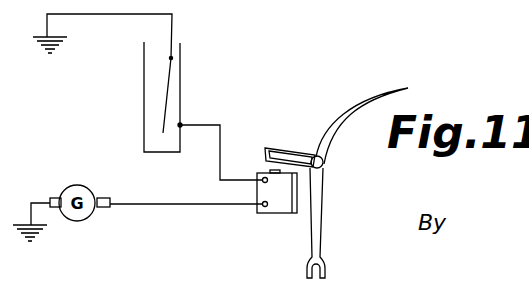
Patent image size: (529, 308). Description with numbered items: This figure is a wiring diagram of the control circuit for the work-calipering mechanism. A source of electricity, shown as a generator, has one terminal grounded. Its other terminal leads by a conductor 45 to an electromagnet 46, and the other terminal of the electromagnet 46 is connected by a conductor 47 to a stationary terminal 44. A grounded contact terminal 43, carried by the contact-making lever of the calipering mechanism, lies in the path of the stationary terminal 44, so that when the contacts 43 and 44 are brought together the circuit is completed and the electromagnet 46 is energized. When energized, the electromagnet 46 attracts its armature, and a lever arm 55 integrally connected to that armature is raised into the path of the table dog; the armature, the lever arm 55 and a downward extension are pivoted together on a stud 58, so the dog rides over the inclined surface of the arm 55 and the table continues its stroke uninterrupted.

The grounded contact terminal 43 is at (165, 123).
The stationary terminal 44 is at (181, 125).
The conductor 45 is at (168, 203).
The electromagnet 46 is at (278, 207).
The conductor 47 is at (222, 150).
The lever arm 55 is at (348, 115).
The stud 58 is at (336, 166).